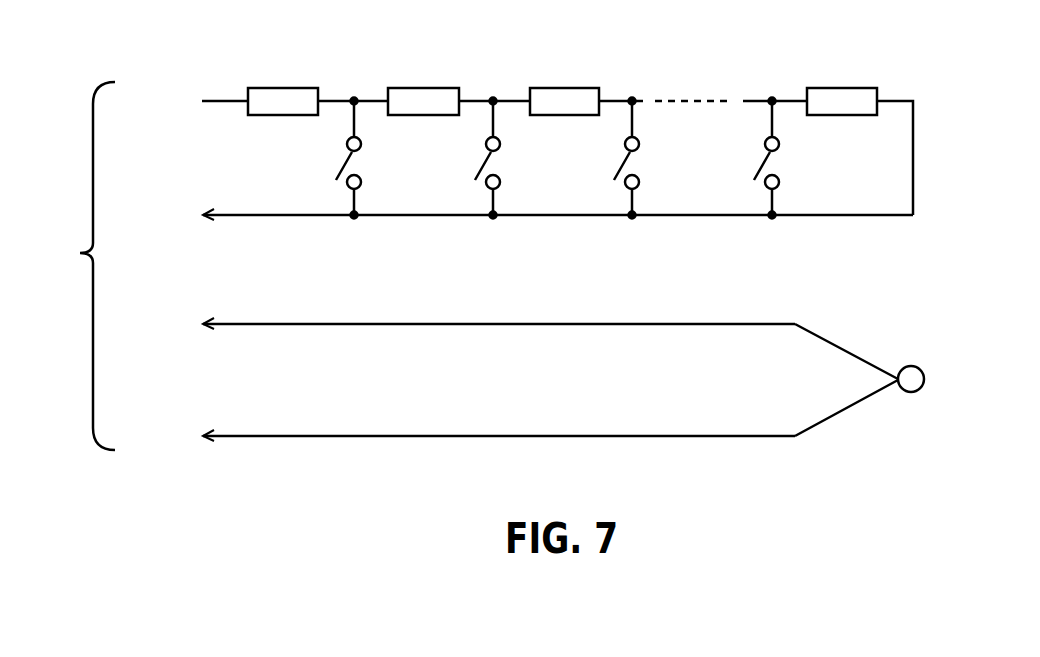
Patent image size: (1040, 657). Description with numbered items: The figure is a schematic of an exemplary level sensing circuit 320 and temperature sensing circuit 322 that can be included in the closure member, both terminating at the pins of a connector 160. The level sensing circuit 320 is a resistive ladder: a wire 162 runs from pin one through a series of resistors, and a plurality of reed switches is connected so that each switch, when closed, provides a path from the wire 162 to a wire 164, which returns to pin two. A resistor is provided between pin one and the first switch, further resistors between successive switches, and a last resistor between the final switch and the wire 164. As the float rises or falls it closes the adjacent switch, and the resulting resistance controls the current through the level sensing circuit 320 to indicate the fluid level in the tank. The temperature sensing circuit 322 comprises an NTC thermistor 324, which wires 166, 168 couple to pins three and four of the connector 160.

The connector 160 is at (109, 266).
The wire 162 is at (224, 100).
The wire 164 is at (300, 217).
The wire 166 is at (300, 326).
The wire 168 is at (300, 438).
The level sensing circuit 320 is at (930, 143).
The temperature sensing circuit 322 is at (937, 386).
The NTC thermistor 324 is at (916, 392).